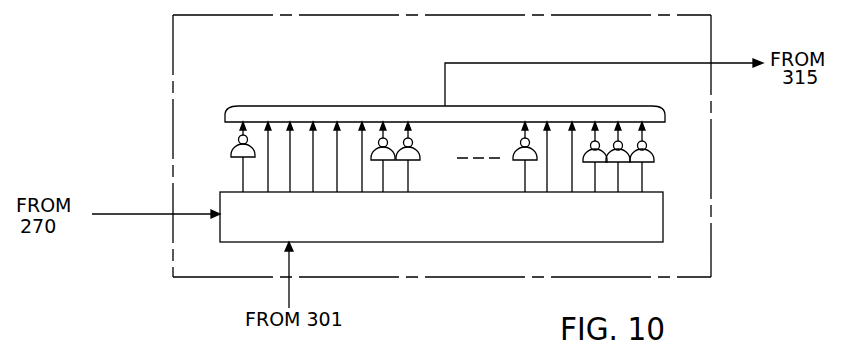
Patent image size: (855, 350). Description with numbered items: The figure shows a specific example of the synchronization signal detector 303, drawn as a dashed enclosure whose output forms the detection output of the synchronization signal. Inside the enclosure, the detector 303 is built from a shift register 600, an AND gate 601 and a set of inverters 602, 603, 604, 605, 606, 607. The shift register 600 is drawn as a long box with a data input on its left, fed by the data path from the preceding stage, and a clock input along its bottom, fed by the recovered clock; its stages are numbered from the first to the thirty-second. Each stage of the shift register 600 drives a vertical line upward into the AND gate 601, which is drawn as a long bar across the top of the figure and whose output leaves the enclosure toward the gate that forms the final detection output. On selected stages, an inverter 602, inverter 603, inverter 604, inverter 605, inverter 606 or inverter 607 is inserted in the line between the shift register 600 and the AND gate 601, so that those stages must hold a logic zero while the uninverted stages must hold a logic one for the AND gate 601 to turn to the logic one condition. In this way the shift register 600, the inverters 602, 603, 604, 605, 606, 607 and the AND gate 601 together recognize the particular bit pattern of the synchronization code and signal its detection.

The synchronization signal detector 303 is at (172, 71).
The shift register 600 is at (566, 243).
The AND gate 601 is at (315, 106).
The inverter 602 is at (232, 150).
The inverter 603 is at (387, 161).
The inverter 604 is at (417, 153).
The inverter 605 is at (517, 159).
The inverter 606 is at (590, 153).
The inverter 607 is at (622, 163).